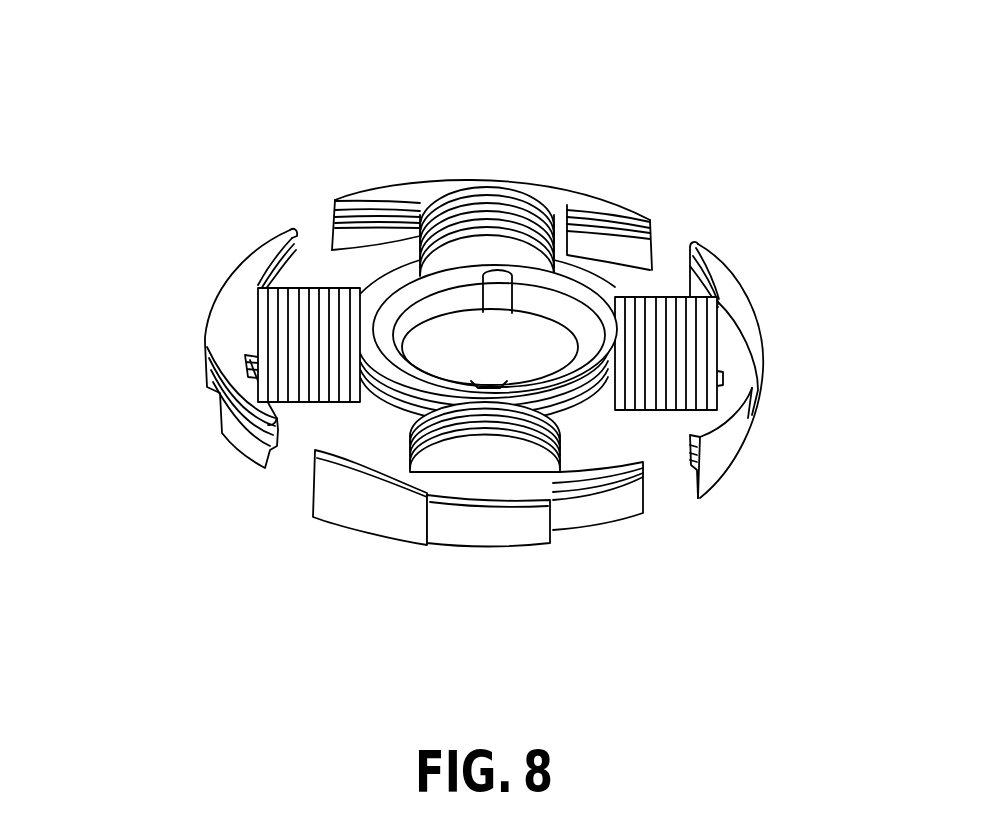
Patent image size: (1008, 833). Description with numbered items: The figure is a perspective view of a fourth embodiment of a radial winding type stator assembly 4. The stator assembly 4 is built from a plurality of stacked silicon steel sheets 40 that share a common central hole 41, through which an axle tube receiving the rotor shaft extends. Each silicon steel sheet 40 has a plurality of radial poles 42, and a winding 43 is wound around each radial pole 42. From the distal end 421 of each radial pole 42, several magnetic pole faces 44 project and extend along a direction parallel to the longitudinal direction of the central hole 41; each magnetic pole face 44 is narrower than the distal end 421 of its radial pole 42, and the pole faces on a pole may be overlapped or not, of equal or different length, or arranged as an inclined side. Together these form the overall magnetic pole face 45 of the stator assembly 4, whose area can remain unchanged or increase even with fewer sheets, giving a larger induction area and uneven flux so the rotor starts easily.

The stator assembly 4 is at (393, 246).
The silicon steel sheet 40 is at (603, 302).
The central hole 41 is at (527, 332).
The radial pole 42 is at (240, 327).
The distal end 421 is at (464, 182).
The winding 43 is at (313, 302).
The magnetic pole face 44 is at (388, 518).
The overall magnetic pole face 45 is at (178, 353).